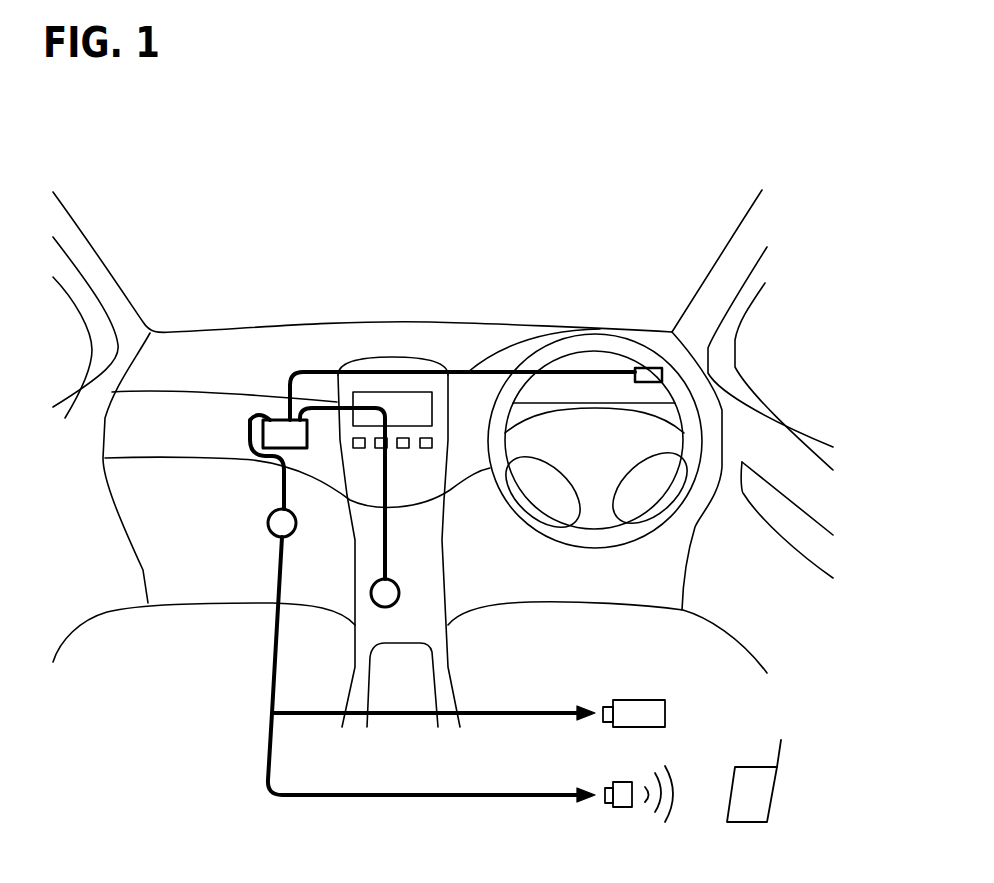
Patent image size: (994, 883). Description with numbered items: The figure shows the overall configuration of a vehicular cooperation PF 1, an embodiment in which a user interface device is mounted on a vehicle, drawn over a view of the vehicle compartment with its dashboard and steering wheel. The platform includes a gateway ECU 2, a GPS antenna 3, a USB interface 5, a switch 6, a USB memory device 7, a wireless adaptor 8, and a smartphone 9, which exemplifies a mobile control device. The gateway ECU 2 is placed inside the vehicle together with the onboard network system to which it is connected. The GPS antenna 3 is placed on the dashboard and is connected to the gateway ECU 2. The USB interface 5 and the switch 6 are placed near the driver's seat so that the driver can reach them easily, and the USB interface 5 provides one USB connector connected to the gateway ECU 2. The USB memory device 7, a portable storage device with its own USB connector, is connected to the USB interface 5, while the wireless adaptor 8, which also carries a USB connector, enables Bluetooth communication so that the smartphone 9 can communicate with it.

The vehicular cooperation PF 1 is at (490, 152).
The gateway ECU 2 is at (284, 419).
The GPS antenna 3 is at (645, 366).
The USB interface 5 is at (268, 505).
The switch 6 is at (388, 578).
The USB memory device 7 is at (628, 700).
The wireless adaptor 8 is at (618, 783).
The smartphone 9 is at (763, 807).